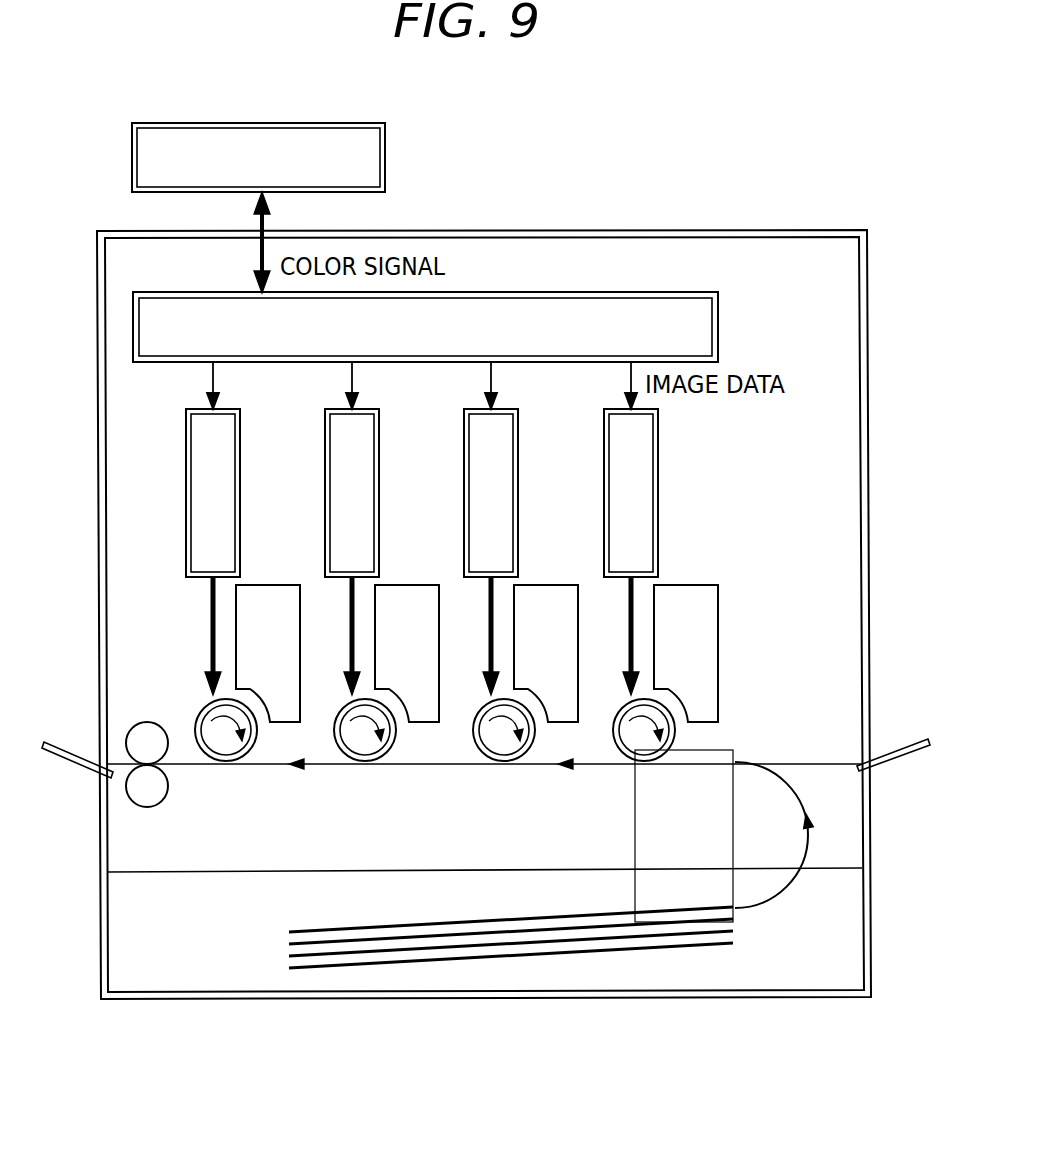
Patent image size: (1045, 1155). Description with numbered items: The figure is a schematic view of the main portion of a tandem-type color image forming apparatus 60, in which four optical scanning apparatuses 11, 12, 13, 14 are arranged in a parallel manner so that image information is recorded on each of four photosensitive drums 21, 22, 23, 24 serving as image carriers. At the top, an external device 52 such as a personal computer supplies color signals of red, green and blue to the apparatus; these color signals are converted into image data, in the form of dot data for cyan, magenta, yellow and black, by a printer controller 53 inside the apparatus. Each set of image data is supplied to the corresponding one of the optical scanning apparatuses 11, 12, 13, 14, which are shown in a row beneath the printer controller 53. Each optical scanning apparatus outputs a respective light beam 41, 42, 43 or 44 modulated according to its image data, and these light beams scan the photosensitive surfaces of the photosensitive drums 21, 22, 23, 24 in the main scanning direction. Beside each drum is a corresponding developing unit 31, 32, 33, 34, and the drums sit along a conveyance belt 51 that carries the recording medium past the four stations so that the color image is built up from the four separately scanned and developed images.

The color image forming apparatus 60 is at (734, 224).
The external device 52 is at (385, 152).
The printer controller 53 is at (718, 314).
The optical scanning apparatus 11 is at (208, 464).
The optical scanning apparatus 12 is at (347, 464).
The optical scanning apparatus 13 is at (486, 464).
The optical scanning apparatus 14 is at (616, 464).
The photosensitive drum 21 is at (225, 748).
The photosensitive drum 22 is at (364, 748).
The photosensitive drum 23 is at (503, 748).
The photosensitive drum 24 is at (643, 748).
The developing unit 31 is at (277, 593).
The developing unit 32 is at (416, 593).
The developing unit 33 is at (557, 593).
The developing unit 34 is at (697, 593).
The light beam 41 is at (211, 643).
The light beam 42 is at (350, 643).
The light beam 43 is at (489, 643).
The light beam 44 is at (629, 643).
The conveyance belt 51 is at (801, 772).